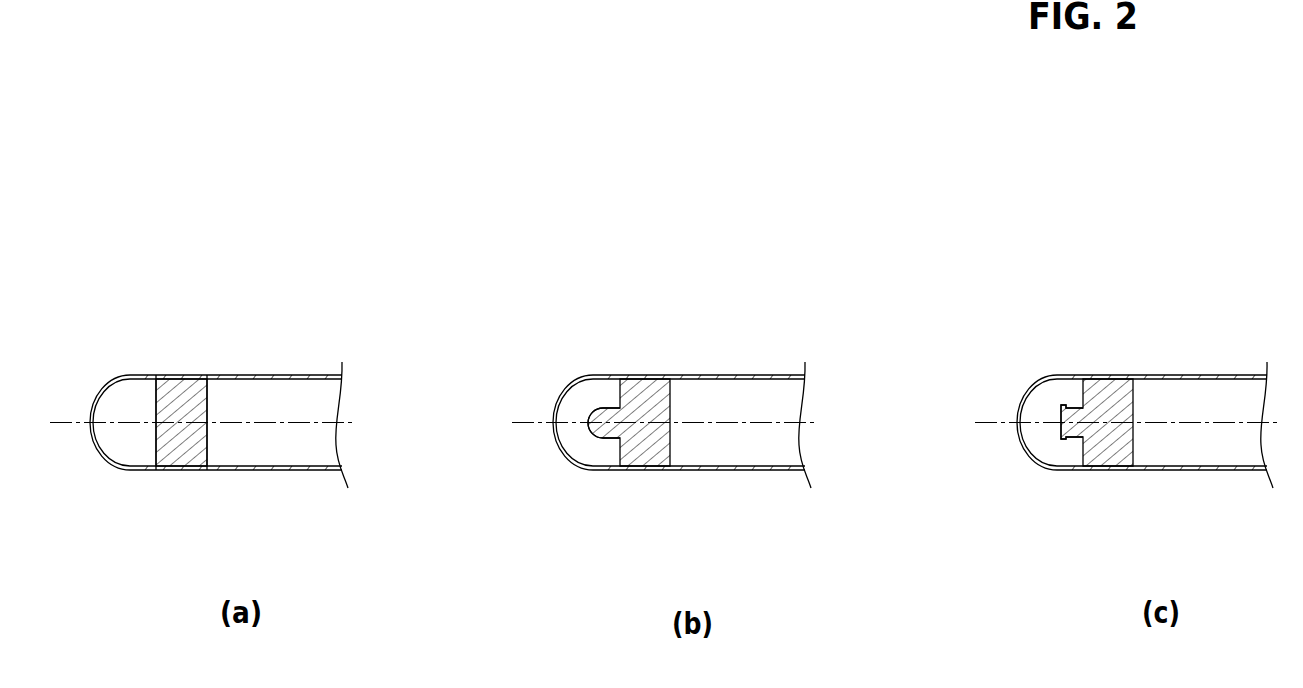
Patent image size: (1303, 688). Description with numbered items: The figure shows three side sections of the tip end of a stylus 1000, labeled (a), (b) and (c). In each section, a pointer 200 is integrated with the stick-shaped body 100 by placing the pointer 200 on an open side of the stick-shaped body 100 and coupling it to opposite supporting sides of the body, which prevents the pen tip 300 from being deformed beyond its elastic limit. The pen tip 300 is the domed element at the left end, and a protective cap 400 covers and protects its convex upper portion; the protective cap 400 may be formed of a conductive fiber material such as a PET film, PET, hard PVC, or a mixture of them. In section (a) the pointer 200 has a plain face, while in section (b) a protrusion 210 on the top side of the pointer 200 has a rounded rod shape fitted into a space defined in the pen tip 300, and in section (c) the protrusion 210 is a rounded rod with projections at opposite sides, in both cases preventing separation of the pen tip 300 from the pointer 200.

The stylus 1000 is at (258, 102).
The stick-shaped body 100 is at (296, 385).
The pointer 200 is at (188, 386).
The protrusion 210 is at (607, 438).
The pen tip 300 is at (135, 448).
The protective cap 400 is at (111, 378).